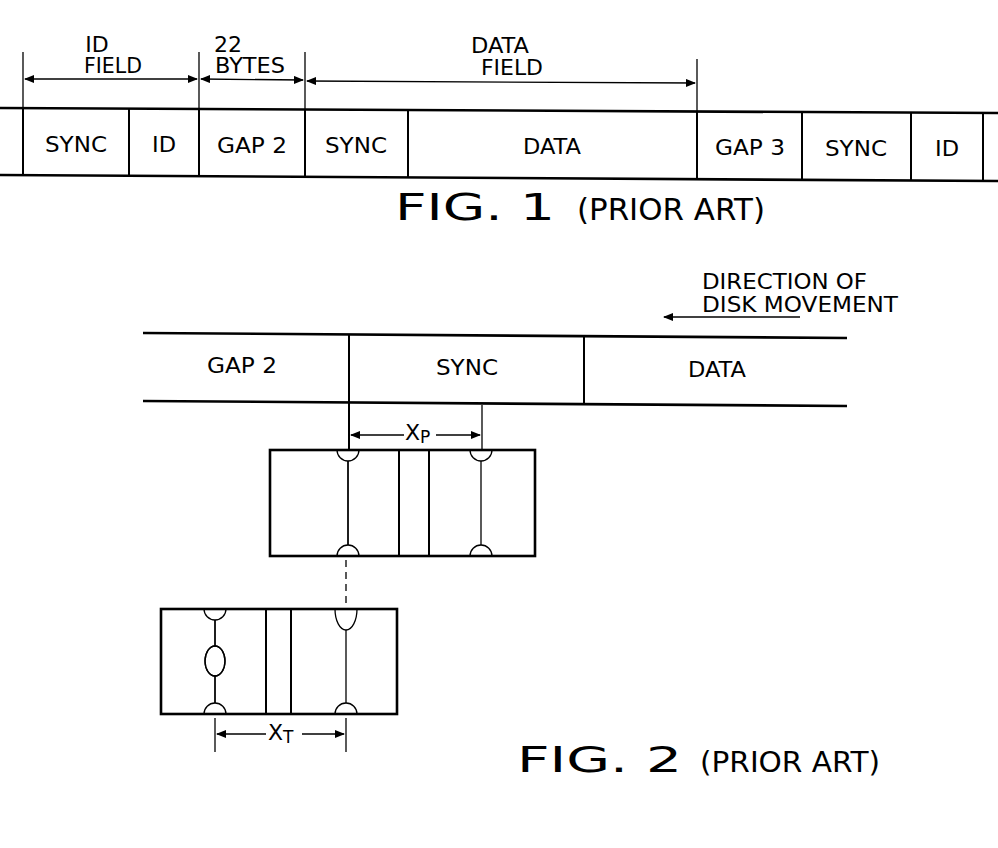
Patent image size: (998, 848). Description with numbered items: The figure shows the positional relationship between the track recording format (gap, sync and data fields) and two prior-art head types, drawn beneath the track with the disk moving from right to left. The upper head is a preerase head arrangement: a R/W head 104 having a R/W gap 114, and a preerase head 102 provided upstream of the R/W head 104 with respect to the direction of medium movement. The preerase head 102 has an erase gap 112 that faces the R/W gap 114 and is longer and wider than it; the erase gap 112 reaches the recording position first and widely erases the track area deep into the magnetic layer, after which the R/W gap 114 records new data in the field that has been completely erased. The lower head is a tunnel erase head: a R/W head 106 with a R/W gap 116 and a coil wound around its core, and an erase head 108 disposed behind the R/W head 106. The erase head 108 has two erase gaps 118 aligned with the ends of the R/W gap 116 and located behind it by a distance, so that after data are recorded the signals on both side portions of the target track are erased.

The preerase head 102 is at (538, 482).
The R/W head 104 is at (266, 518).
The R/W head 106 is at (400, 683).
The erase head 108 is at (157, 680).
The erase gap 112 is at (481, 517).
The R/W gap 114 is at (348, 515).
The R/W gap 116 is at (346, 652).
The erase gaps 118 is at (215, 632).